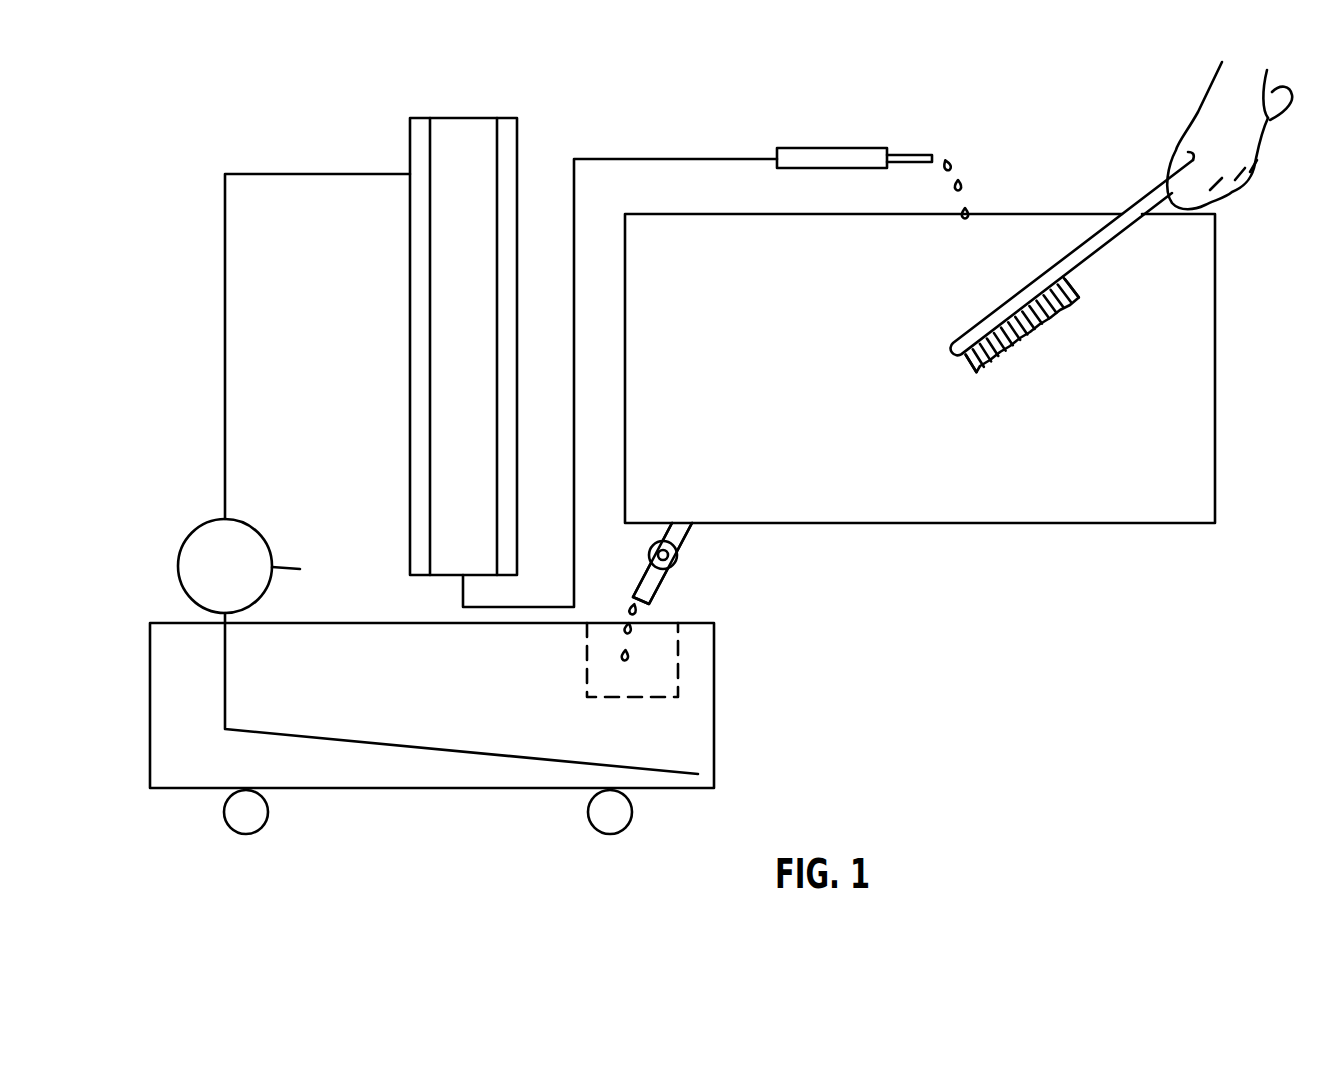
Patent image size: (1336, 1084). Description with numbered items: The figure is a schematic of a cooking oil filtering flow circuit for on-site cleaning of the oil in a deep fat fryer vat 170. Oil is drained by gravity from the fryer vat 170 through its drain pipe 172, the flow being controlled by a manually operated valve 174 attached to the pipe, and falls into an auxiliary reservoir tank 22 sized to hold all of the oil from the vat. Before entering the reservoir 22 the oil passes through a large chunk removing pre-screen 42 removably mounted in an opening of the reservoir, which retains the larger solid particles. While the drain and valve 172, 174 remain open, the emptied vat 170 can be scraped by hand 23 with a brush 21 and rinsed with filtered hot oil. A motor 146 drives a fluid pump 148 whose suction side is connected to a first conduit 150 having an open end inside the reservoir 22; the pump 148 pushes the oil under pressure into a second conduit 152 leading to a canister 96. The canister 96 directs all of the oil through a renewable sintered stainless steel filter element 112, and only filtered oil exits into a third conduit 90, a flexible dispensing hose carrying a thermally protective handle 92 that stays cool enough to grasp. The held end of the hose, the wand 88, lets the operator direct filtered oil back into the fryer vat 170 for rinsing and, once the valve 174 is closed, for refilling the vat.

The brush 21 is at (1030, 345).
The reservoir tank 22 is at (661, 790).
The hand 23 is at (1247, 183).
The pre-screen 42 is at (663, 698).
The wand 88 is at (922, 153).
The third conduit 90 is at (670, 159).
The thermally protective handle 92 is at (835, 148).
The canister 96 is at (412, 248).
The filter element 112 is at (437, 168).
The motor 146 is at (245, 522).
The fluid pump 148 is at (314, 573).
The first conduit 150 is at (430, 752).
The second conduit 152 is at (227, 351).
The fryer vat 170 is at (1216, 382).
The drain pipe 172 is at (660, 580).
The valve 174 is at (678, 558).